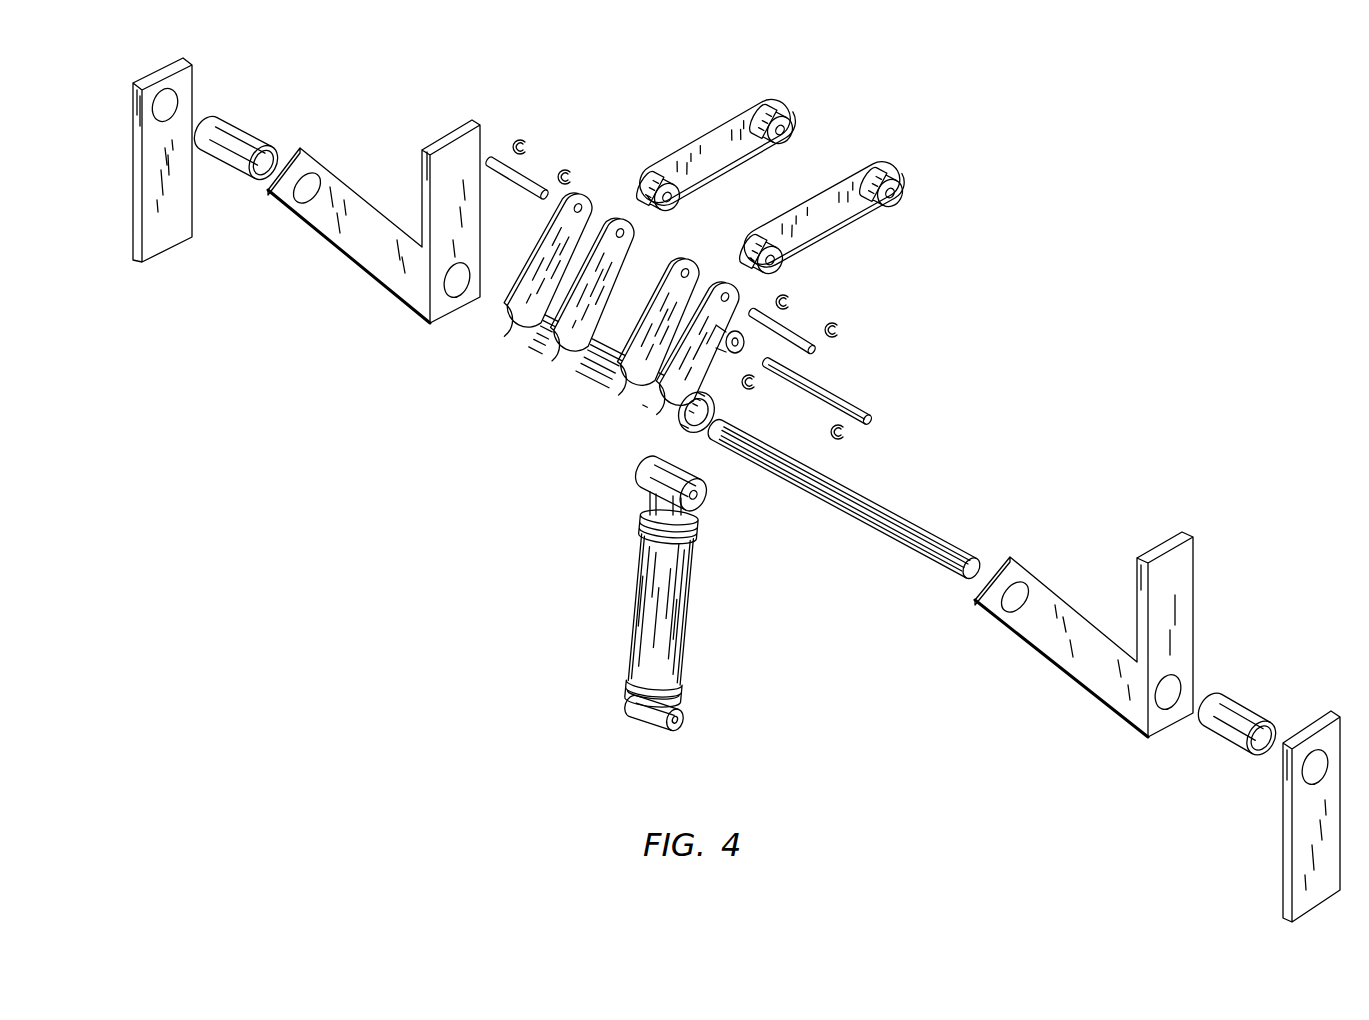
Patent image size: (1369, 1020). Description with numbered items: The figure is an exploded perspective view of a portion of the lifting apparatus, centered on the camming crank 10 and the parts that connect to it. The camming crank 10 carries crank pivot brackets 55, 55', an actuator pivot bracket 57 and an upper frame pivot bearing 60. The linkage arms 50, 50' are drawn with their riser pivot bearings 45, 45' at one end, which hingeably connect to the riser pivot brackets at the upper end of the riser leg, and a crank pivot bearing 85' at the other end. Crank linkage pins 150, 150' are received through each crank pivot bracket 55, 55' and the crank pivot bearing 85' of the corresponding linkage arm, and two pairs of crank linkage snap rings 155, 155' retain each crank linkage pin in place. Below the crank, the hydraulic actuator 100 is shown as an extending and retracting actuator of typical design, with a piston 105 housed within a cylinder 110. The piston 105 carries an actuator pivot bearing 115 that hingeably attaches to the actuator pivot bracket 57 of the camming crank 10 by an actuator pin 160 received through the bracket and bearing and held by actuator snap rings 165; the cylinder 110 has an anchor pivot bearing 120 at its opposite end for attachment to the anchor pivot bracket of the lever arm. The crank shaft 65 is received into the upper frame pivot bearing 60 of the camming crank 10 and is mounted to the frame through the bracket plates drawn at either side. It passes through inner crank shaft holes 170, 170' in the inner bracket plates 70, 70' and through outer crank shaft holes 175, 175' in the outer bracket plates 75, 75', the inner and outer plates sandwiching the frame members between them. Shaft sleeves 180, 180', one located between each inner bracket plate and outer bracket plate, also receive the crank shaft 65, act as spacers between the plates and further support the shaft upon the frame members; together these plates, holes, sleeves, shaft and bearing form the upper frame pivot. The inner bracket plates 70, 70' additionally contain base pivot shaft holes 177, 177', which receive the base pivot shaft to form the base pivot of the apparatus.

The camming crank 10 is at (586, 391).
The riser pivot bearing 45 is at (895, 169).
The riser pivot bearing 45' is at (789, 108).
The linkage arm 50 is at (826, 214).
The linkage arm 50' is at (718, 136).
The crank pivot bracket 55 is at (677, 326).
The crank pivot bracket 55' is at (577, 260).
The actuator pivot bracket 57 is at (729, 371).
The upper frame pivot bearing 60 is at (678, 430).
The crank shaft 65 is at (887, 516).
The inner bracket plate 70 is at (1084, 636).
The inner bracket plate 70' is at (374, 221).
The outer bracket plate 75 is at (1268, 816).
The outer bracket plate 75' is at (179, 169).
The crank pivot bearing 85' is at (702, 198).
The hydraulic actuator 100 is at (608, 594).
The piston 105 is at (640, 508).
The cylinder 110 is at (683, 639).
The actuator pivot bearing 115 is at (701, 495).
The anchor pivot bearing 120 is at (648, 716).
The crank linkage pin 150 is at (807, 342).
The crank linkage pin 150' is at (516, 201).
The crank linkage snap ring 155 is at (838, 307).
The crank linkage snap ring 155' is at (533, 136).
The actuator pin 160 is at (852, 408).
The actuator snap ring 165 is at (840, 440).
The inner crank shaft hole 170 is at (995, 624).
The inner crank shaft hole 170' is at (274, 206).
The outer crank shaft hole 175 is at (1267, 768).
The outer crank shaft hole 175' is at (206, 98).
The base pivot shaft hole 177 is at (1150, 720).
The base pivot shaft hole 177' is at (425, 311).
The shaft sleeve 180 is at (1245, 716).
The shaft sleeve 180' is at (245, 138).